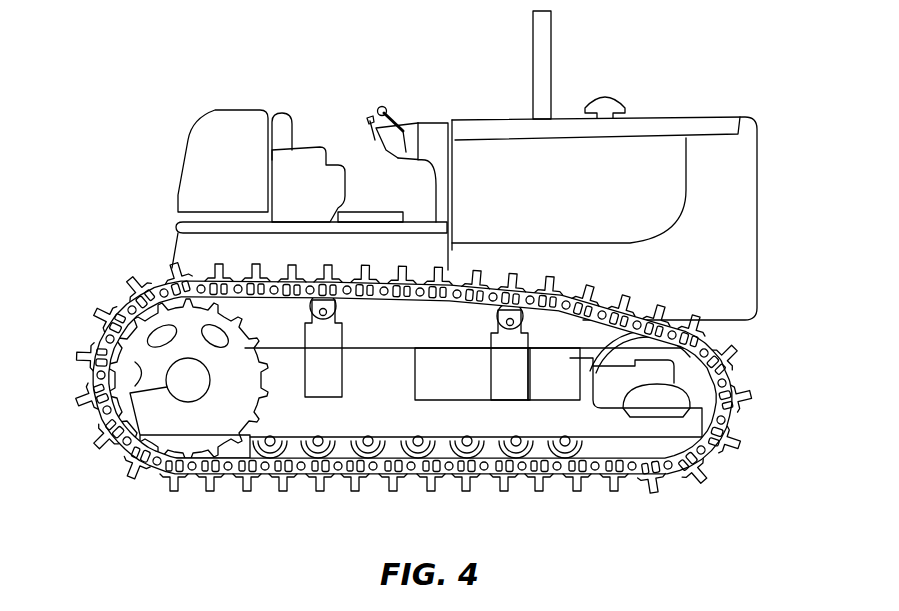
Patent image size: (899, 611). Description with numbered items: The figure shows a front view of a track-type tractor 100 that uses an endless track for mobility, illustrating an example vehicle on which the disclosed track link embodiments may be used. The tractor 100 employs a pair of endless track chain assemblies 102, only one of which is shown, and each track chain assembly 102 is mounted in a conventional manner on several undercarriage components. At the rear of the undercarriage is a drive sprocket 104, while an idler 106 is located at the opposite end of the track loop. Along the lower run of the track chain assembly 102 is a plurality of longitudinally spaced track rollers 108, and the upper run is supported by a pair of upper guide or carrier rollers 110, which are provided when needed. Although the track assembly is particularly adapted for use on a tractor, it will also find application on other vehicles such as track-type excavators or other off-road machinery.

The track-type tractor 100 is at (126, 50).
The endless track chain assembly 102 is at (548, 498).
The drive sprocket 104 is at (142, 350).
The idler 106 is at (690, 377).
The track rollers 108 is at (510, 452).
The carrier rollers 110 is at (344, 313).